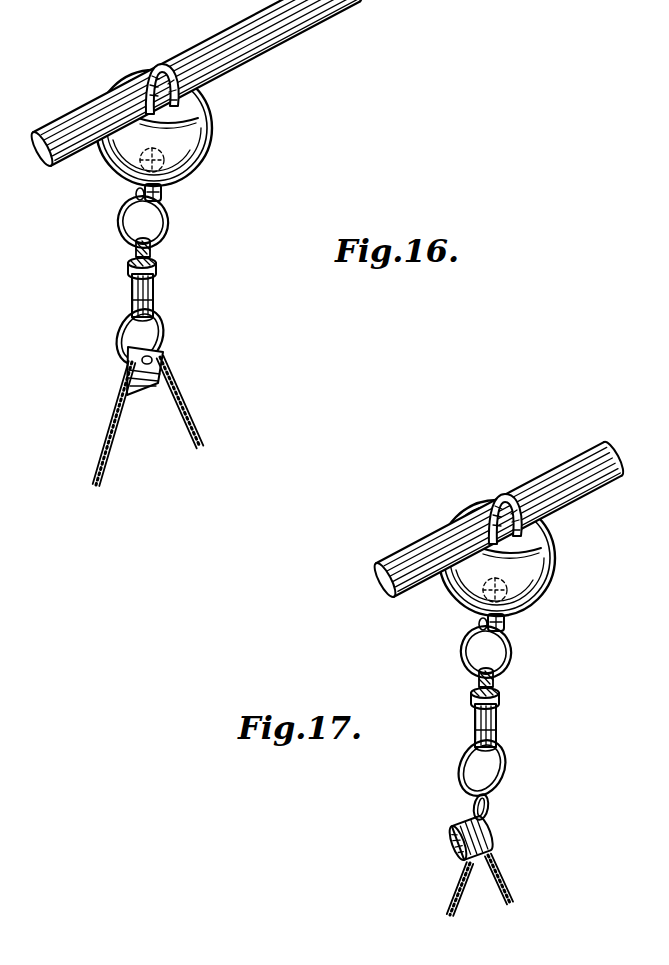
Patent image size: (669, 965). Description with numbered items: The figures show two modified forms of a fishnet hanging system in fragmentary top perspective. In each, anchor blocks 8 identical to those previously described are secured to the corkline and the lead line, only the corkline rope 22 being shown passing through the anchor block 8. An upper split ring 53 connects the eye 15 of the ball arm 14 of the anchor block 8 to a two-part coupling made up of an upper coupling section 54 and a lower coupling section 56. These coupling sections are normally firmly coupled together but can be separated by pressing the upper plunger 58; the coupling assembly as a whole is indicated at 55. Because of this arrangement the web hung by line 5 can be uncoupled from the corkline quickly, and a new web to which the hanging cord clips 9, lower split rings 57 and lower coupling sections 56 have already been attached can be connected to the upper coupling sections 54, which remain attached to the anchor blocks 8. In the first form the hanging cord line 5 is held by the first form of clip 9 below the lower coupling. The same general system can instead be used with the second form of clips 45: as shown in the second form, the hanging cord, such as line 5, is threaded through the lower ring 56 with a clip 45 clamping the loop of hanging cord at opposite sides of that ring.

In FIG. 16, the corkline rope 22 is at (307, 26).
In FIG. 17, the corkline rope 22 is at (505, 519).
In FIG. 16, the anchor block 8 is at (205, 121).
In FIG. 17, the anchor block 8 is at (517, 558).
In FIG. 16, the ball arm 14 is at (163, 191).
In FIG. 17, the ball arm 14 is at (528, 617).
In FIG. 16, the eye 15 is at (137, 197).
In FIG. 17, the eye 15 is at (457, 623).
In FIG. 16, the upper split ring 53 is at (170, 225).
In FIG. 17, the upper split ring 53 is at (508, 652).
In FIG. 16, the upper plunger 58 is at (152, 252).
In FIG. 17, the upper plunger 58 is at (516, 683).
In FIG. 16, the upper coupling section 54 is at (158, 268).
In FIG. 17, the upper coupling section 54 is at (513, 708).
In FIG. 16, the lower split ring 57 is at (155, 300).
In FIG. 17, the lower split ring 57 is at (485, 727).
In FIG. 16, the swivel assembly 55 is at (125, 286).
In FIG. 17, the swivel assembly 55 is at (446, 728).
In FIG. 16, the lower coupling section 56 is at (166, 333).
In FIG. 17, the lower coupling section 56 is at (508, 767).
In FIG. 16, the hanging cord clip 9 is at (125, 374).
In FIG. 16, the line 5 is at (189, 395).
In FIG. 17, the line 5 is at (494, 853).
In FIG. 17, the clip 45 is at (495, 838).